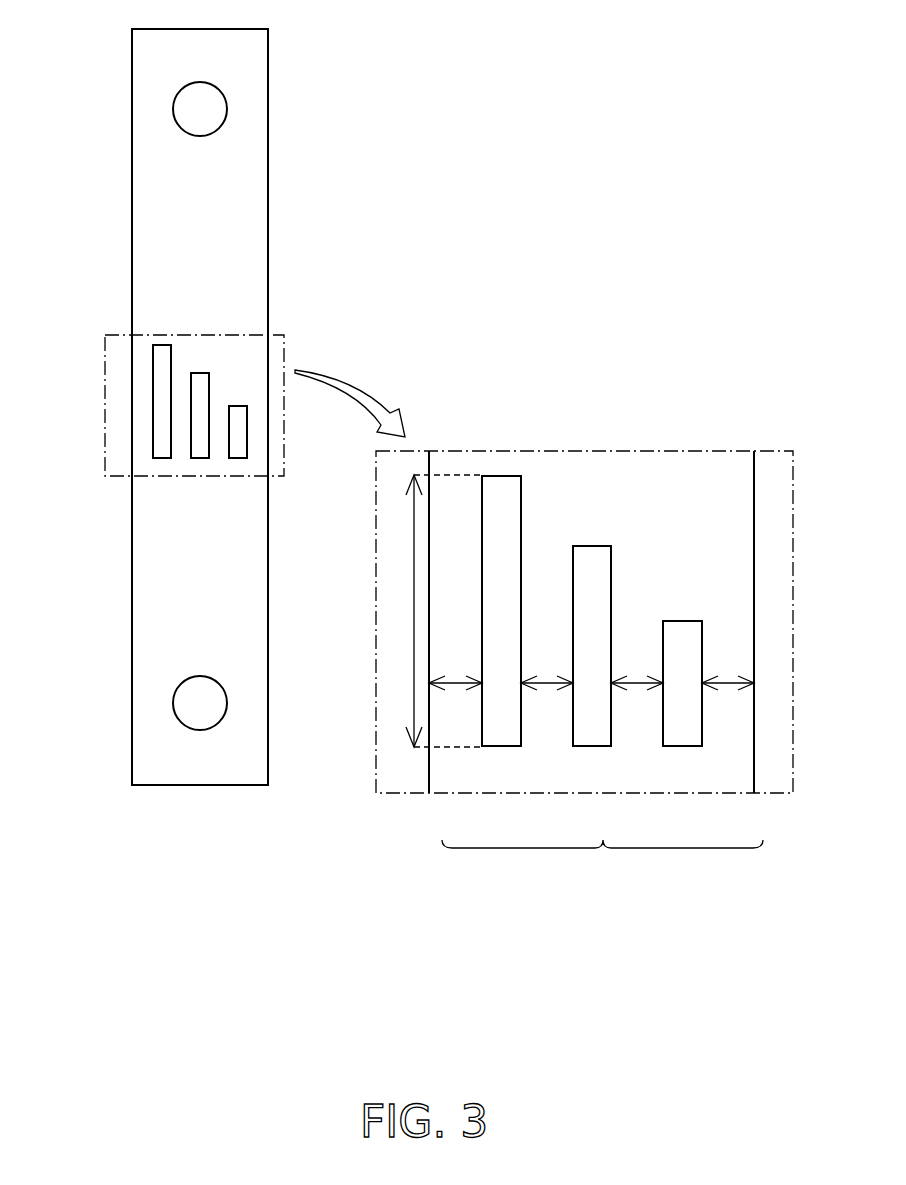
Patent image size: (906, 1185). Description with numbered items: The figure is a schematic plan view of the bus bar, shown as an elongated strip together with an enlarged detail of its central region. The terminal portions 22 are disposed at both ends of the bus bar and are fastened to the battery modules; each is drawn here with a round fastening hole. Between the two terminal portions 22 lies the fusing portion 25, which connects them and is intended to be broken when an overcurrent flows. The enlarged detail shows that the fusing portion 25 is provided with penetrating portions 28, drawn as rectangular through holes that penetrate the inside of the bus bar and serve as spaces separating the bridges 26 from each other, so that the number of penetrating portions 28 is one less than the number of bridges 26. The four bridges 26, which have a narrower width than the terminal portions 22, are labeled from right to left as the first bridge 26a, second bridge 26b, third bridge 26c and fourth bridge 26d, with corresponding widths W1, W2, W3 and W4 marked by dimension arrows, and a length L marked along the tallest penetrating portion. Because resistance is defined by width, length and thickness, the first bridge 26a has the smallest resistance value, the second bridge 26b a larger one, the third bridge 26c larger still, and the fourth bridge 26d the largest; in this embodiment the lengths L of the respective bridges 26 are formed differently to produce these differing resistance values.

The terminal portion 22 is at (263, 147).
The fusing portion 25 is at (284, 346).
The penetrating portion 28 is at (680, 630).
The bridges 26 is at (602, 862).
The first bridge 26a is at (728, 733).
The second bridge 26b is at (640, 733).
The third bridge 26c is at (547, 733).
The fourth bridge 26d is at (455, 733).
The width of first bridge W1 is at (728, 669).
The width of second bridge W2 is at (637, 669).
The width of third bridge W3 is at (547, 669).
The width of fourth bridge W4 is at (455, 669).
The length of bridge L is at (433, 611).